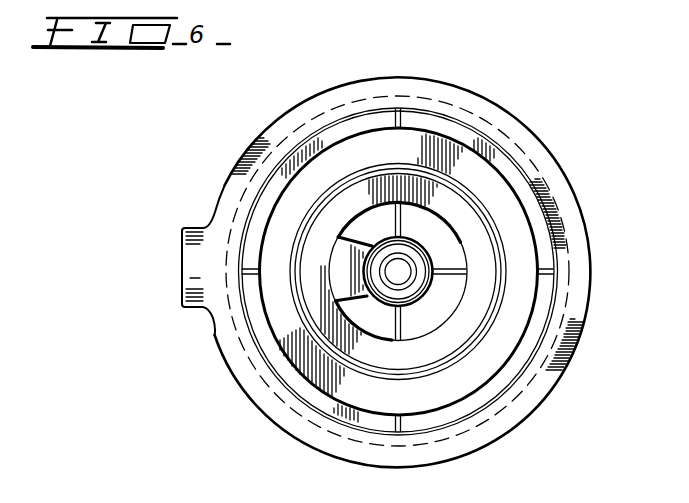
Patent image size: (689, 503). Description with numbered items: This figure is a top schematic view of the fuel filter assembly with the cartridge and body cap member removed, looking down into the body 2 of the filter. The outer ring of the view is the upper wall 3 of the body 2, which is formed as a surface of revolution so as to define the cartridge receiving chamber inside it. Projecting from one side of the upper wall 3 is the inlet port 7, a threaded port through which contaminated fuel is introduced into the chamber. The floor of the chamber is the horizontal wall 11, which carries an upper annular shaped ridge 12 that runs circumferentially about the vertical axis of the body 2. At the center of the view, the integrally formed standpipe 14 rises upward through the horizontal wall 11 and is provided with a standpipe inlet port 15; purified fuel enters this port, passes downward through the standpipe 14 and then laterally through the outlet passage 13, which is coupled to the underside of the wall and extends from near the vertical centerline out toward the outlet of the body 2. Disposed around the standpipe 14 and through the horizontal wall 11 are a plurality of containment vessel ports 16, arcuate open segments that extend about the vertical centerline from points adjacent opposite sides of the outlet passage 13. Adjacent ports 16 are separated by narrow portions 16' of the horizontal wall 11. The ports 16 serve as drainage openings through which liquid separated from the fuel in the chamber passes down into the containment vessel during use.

The body 2 is at (531, 131).
The upper wall 3 is at (413, 271).
The inlet port 7 is at (198, 242).
The horizontal wall 11 is at (337, 195).
The upper annular shaped ridge 12 is at (292, 273).
The outlet passage 13 is at (351, 275).
The standpipe 14 is at (399, 271).
The standpipe inlet port 15 is at (352, 239).
The containment vessel ports 16 is at (420, 270).
The narrow portions 16' is at (463, 299).